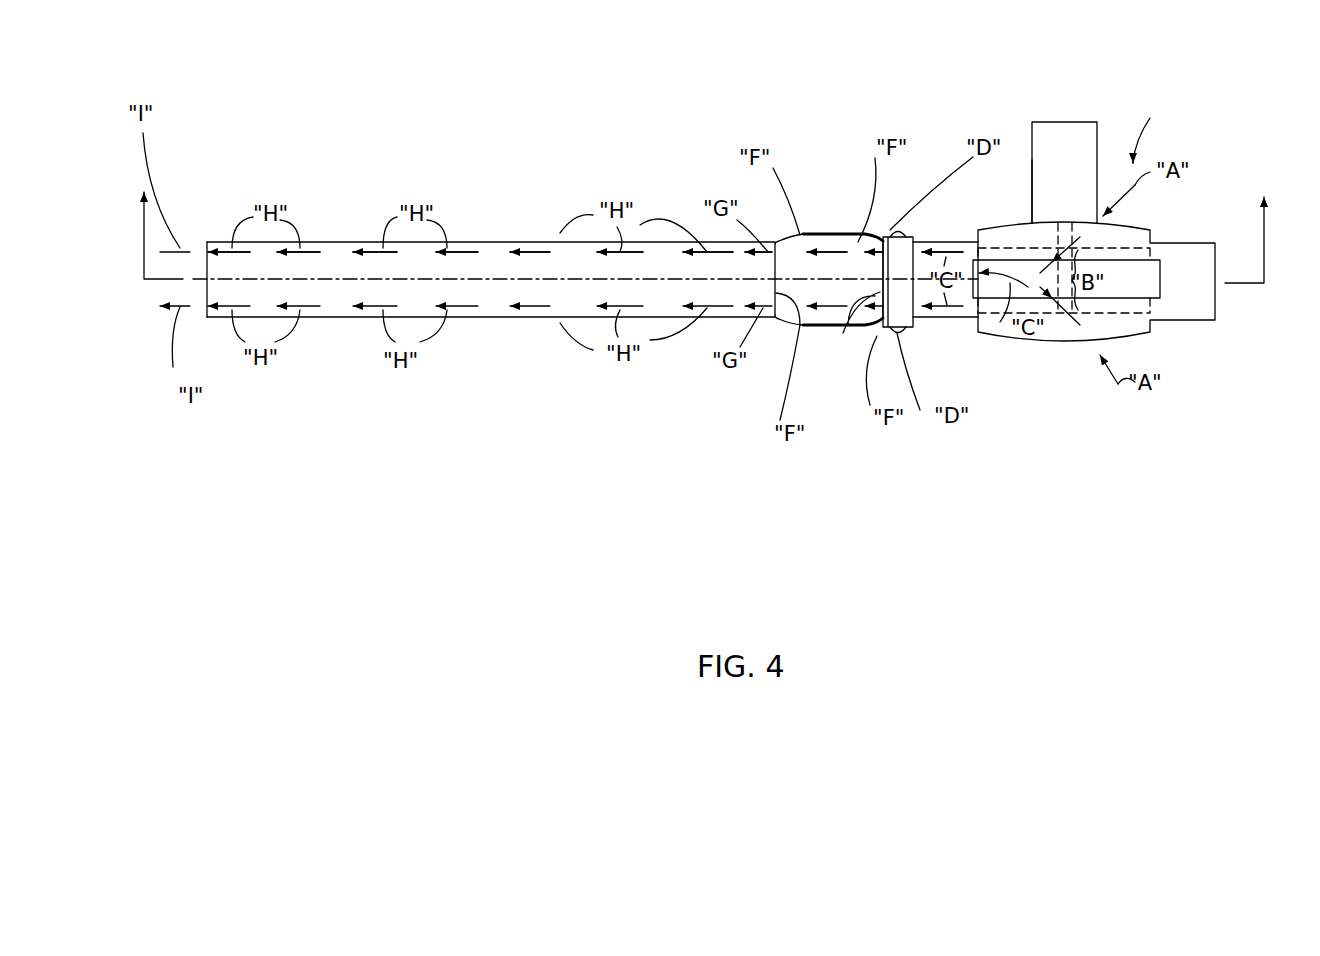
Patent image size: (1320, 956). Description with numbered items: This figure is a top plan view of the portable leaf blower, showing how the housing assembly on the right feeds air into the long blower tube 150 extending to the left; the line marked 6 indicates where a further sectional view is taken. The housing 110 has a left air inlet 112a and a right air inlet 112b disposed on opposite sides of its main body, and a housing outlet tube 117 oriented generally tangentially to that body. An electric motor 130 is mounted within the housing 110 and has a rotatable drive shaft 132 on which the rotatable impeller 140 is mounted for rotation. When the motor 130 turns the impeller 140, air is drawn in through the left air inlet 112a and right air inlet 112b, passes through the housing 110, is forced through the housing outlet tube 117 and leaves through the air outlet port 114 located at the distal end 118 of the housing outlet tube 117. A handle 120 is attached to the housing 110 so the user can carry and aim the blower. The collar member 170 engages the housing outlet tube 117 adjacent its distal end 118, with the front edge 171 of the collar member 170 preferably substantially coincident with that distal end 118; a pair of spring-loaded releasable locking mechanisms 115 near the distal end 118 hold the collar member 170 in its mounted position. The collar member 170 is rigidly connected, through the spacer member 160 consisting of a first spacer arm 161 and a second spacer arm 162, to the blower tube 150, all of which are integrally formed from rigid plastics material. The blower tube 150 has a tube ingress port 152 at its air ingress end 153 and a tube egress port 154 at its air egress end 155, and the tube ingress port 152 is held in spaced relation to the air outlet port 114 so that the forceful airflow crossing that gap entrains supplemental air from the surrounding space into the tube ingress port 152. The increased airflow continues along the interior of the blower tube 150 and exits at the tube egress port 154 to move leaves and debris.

The section line 6- 6 is at (703, 222).
The housing 110 is at (1114, 281).
The left air inlet 112a is at (1110, 281).
The right air inlet 112b is at (1043, 343).
The air outlet port 114 is at (843, 321).
The spring-loaded releasable locking mechanisms 115 is at (902, 228).
The housing outlet tube 117 is at (958, 310).
The distal end 118 is at (848, 327).
The handle 120 is at (1165, 267).
The motor 130 is at (1073, 133).
The drive shaft 132 is at (1060, 233).
The rotatable impeller 140 is at (1133, 308).
The blower tube 150 is at (569, 256).
The tube ingress port 152 is at (760, 347).
The air ingress end 153 is at (797, 323).
The tube egress port 154 is at (477, 219).
The air egress end 155 is at (477, 219).
The spacer member 160 is at (800, 306).
The first spacer arm 161 is at (800, 306).
The second spacer arm 162 is at (800, 306).
The collar member 170 is at (927, 277).
The front edge 171 is at (927, 277).